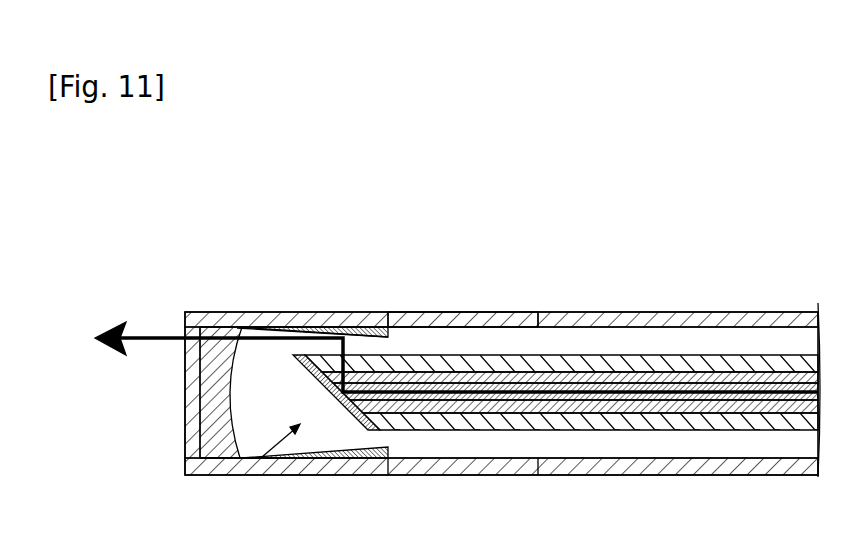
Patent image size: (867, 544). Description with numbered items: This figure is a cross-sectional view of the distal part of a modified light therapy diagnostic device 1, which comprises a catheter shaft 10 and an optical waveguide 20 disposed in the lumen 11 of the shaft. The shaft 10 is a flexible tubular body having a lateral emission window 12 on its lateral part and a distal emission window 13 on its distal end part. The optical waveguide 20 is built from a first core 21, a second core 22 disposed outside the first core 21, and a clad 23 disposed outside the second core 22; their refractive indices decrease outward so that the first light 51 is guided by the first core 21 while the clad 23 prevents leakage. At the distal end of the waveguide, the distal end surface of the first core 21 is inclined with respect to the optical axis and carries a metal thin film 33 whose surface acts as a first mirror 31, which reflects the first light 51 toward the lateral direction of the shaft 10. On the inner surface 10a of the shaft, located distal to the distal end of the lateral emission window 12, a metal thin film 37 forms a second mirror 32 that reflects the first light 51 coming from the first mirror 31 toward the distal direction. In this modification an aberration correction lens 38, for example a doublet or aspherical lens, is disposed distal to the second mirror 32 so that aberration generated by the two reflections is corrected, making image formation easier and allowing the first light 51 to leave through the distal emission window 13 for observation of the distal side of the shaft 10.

The light therapy diagnostic device 1 is at (165, 255).
The catheter shaft 10 is at (747, 318).
The inner surface of the shaft 10a is at (352, 450).
The lumen 11 is at (262, 457).
The lateral emission window 12 is at (430, 313).
The distal emission window 13 is at (190, 412).
The optical waveguide 20 is at (561, 318).
The first core 21 is at (710, 268).
The second core 22 is at (605, 373).
The clad 23 is at (668, 356).
The first mirror 31 is at (378, 430).
The second mirror 32 is at (368, 337).
The metal thin film 33 is at (318, 383).
The metal thin film 37 is at (345, 326).
The aberration correction lens 38 is at (206, 462).
The first light 51 is at (143, 334).